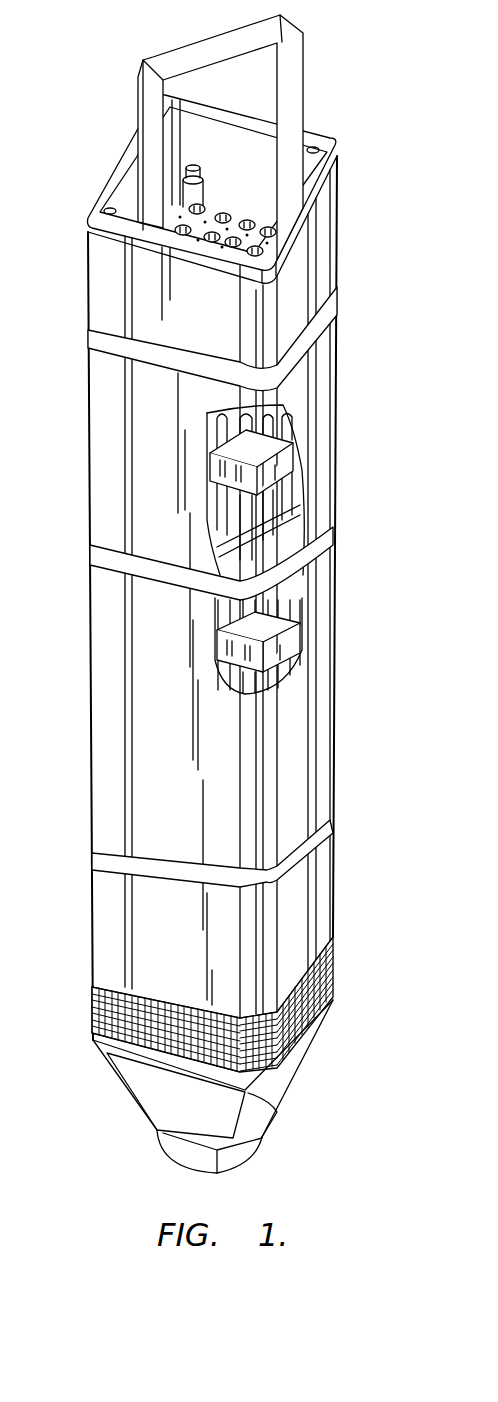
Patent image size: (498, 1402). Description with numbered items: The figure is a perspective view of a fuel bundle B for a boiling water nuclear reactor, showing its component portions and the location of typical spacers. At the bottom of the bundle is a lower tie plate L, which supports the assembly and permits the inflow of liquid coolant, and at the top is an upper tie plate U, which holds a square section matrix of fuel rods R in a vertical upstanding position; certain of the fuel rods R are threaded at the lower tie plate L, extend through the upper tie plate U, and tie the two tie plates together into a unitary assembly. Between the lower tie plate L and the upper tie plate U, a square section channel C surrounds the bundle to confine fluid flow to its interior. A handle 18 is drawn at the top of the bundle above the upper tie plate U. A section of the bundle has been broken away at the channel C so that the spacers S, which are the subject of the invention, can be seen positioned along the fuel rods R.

The handle (bail) 18 is at (207, 40).
The upper tie plate U is at (217, 200).
The spacers S is at (277, 466).
The fuel rods R is at (298, 582).
The fuel bundle B is at (337, 684).
The square section channel C is at (85, 362).
The lower tie plate L is at (308, 1057).